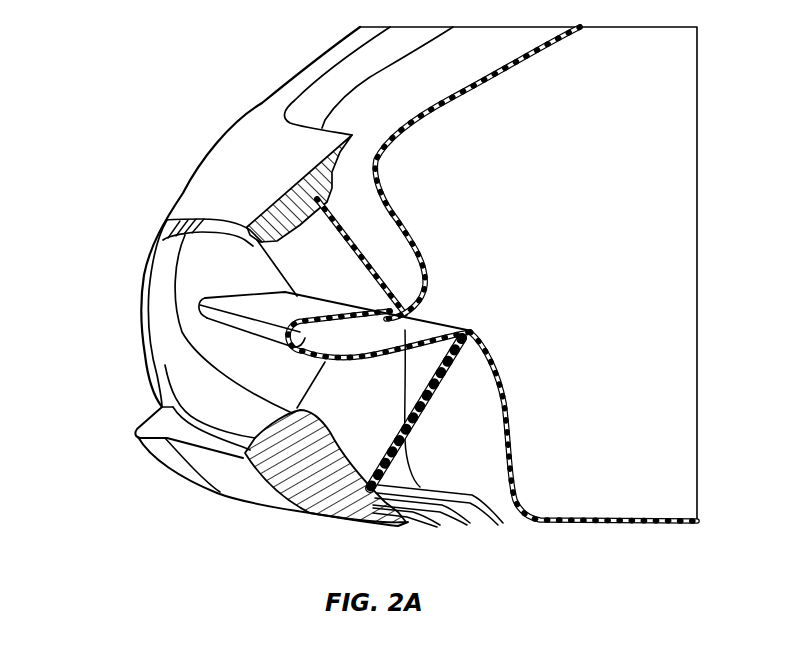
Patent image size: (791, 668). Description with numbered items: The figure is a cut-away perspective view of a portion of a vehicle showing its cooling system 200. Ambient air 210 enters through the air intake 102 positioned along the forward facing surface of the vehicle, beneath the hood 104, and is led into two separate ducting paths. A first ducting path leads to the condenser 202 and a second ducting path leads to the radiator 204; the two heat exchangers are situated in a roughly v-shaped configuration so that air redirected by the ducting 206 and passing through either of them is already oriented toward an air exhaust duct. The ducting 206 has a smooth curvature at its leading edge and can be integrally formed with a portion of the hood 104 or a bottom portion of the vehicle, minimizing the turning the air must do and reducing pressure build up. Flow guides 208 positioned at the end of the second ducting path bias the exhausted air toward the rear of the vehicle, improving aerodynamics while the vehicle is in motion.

The cooling system 200 is at (104, 230).
The air intake 102 is at (231, 284).
The hood 104 is at (472, 70).
The condenser 202 is at (338, 280).
The radiator 204 is at (370, 409).
The ducting 206 is at (428, 269).
The flow guides 208 is at (480, 508).
The ambient air 210 is at (305, 332).